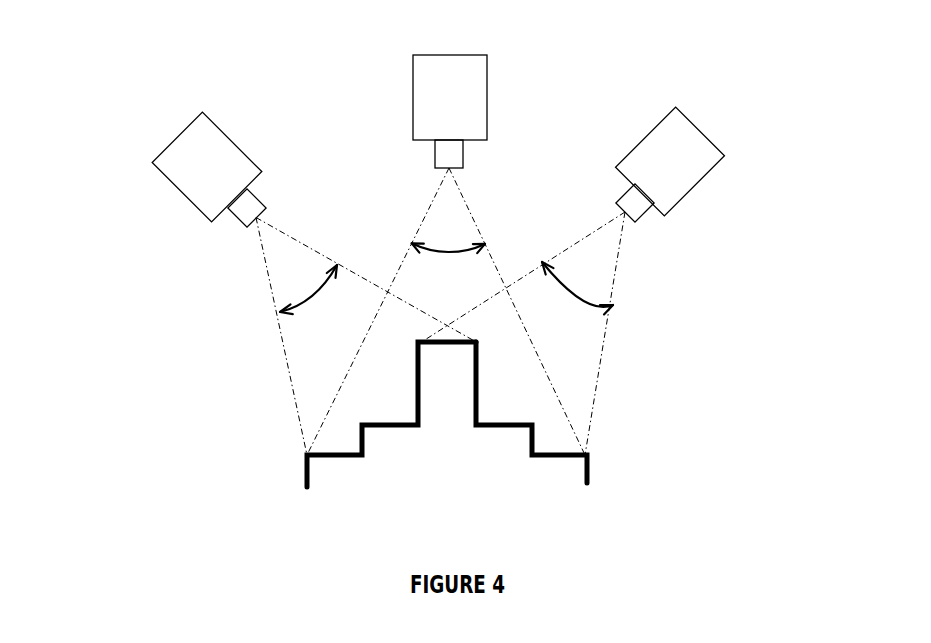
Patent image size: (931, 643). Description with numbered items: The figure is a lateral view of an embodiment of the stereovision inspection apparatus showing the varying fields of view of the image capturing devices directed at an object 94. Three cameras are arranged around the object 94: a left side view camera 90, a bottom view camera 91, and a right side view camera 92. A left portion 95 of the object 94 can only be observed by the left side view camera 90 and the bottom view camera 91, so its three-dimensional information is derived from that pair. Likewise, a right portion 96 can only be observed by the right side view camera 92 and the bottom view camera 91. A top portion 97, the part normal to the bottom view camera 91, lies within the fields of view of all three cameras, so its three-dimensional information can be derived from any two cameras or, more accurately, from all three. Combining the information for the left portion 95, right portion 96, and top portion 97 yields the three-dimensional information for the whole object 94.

The left side view camera 90 is at (178, 139).
The bottom view camera 91 is at (448, 62).
The right side view camera 92 is at (672, 138).
The object 94 is at (510, 414).
The left portion 95 is at (391, 414).
The right portion 96 is at (531, 412).
The top portion 97 is at (446, 278).